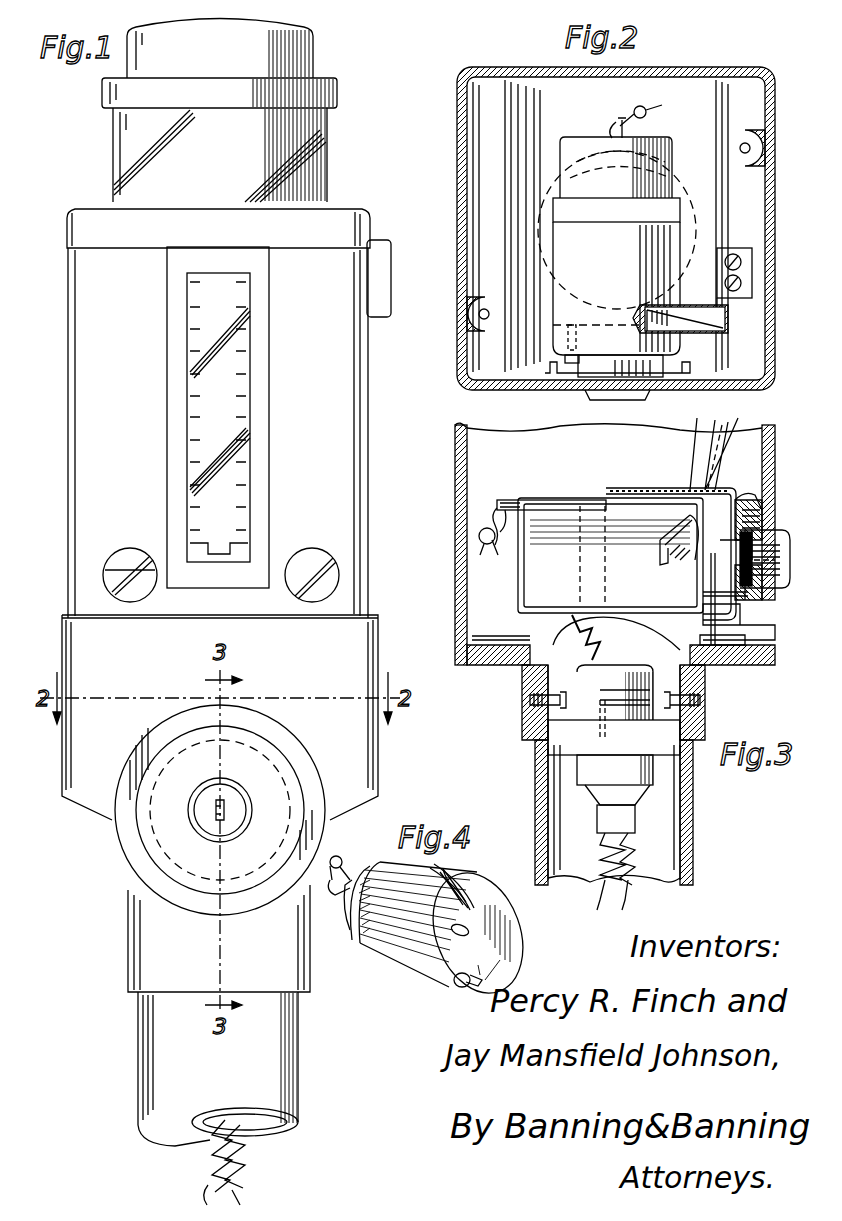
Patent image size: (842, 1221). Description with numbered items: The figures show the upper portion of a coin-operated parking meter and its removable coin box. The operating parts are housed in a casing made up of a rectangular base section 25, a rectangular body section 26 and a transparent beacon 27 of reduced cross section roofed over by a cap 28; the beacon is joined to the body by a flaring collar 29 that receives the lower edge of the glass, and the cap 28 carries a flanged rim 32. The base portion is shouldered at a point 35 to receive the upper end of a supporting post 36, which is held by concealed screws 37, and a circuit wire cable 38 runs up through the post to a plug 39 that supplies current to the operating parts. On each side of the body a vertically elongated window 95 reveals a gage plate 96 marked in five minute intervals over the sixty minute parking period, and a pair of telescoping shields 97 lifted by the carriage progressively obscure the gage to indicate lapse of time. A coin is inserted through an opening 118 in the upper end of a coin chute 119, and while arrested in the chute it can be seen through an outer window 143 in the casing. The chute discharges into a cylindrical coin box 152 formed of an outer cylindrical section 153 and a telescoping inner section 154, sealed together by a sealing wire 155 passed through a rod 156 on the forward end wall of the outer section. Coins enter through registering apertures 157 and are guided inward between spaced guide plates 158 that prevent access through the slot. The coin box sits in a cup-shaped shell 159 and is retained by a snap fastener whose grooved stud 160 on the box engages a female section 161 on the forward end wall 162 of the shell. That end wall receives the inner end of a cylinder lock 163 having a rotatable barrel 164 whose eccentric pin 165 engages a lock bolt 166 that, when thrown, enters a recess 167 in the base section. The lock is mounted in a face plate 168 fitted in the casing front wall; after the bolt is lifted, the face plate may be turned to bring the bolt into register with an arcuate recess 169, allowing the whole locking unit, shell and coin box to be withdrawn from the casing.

In FIG. 1, the rectangular base section 25 is at (355, 661).
In FIG. 2, the rectangular base section 25 is at (773, 192).
In FIG. 3, the rectangular base section 25 is at (470, 522).
In FIG. 1, the rectangular body section 26 is at (352, 425).
In FIG. 1, the transparent beacon 27 is at (318, 165).
In FIG. 1, the cap 28 is at (300, 62).
In FIG. 1, the flaring collar 29 is at (362, 228).
In FIG. 1, the flanged rim 32 is at (337, 97).
In FIG. 3, the shoulder 35 is at (690, 653).
In FIG. 1, the supporting post 36 is at (165, 1041).
In FIG. 2, the supporting post 36 is at (690, 185).
In FIG. 3, the supporting post 36 is at (694, 797).
In FIG. 3, the concealed screws 37 is at (528, 700).
In FIG. 1, the circuit wire cable 38 is at (210, 1165).
In FIG. 3, the circuit wire cable 38 is at (630, 890).
In FIG. 3, the plug 39 is at (640, 768).
In FIG. 1, the vertically elongated window 95 is at (250, 449).
In FIG. 1, the gage plate 96 is at (235, 432).
In FIG. 1, the shield 97 is at (240, 548).
In FIG. 1, the coin opening 118 is at (385, 258).
In FIG. 2, the coin chute 119 is at (715, 318).
In FIG. 3, the coin chute 119 is at (735, 425).
In FIG. 1, the outer window 143 is at (338, 576).
In FIG. 2, the cylindrical coin box 152 is at (570, 146).
In FIG. 3, the cylindrical coin box 152 is at (582, 489).
In FIG. 4, the cylindrical coin box 152 is at (392, 978).
In FIG. 2, the outer cylindrical section 153 is at (616, 276).
In FIG. 3, the outer cylindrical section 153 is at (598, 496).
In FIG. 4, the outer cylindrical section 153 is at (430, 975).
In FIG. 2, the telescoping inner section 154 is at (617, 230).
In FIG. 3, the telescoping inner section 154 is at (548, 500).
In FIG. 4, the telescoping inner section 154 is at (358, 945).
In FIG. 2, the sealing wire 155 is at (628, 124).
In FIG. 3, the sealing wire 155 is at (492, 500).
In FIG. 4, the sealing wire 155 is at (345, 845).
In FIG. 2, the rod 156 is at (628, 110).
In FIG. 3, the rod 156 is at (505, 546).
In FIG. 4, the rod 156 is at (345, 855).
In FIG. 2, the registering apertures 157 is at (668, 292).
In FIG. 3, the registering apertures 157 is at (690, 565).
In FIG. 4, the registering apertures 157 is at (452, 875).
In FIG. 3, the guide plates 158 is at (660, 568).
In FIG. 2, the cup-shaped shell 159 is at (556, 290).
In FIG. 3, the cup-shaped shell 159 is at (635, 494).
In FIG. 2, the grooved stud 160 is at (566, 337).
In FIG. 4, the grooved stud 160 is at (475, 980).
In FIG. 2, the female section 161 is at (565, 360).
In FIG. 2, the forward end wall 162 is at (662, 358).
In FIG. 3, the forward end wall 162 is at (770, 503).
In FIG. 3, the cylinder lock 163 is at (770, 560).
In FIG. 1, the rotatable barrel 164 is at (240, 806).
In FIG. 3, the eccentric pin 165 is at (708, 580).
In FIG. 3, the lock bolt 166 is at (710, 636).
In FIG. 3, the recess 167 is at (703, 665).
In FIG. 1, the face plate 168 is at (255, 780).
In FIG. 3, the face plate 168 is at (770, 605).
In FIG. 1, the arcuate recess 169 is at (276, 736).
In FIG. 3, the arcuate recess 169 is at (762, 490).